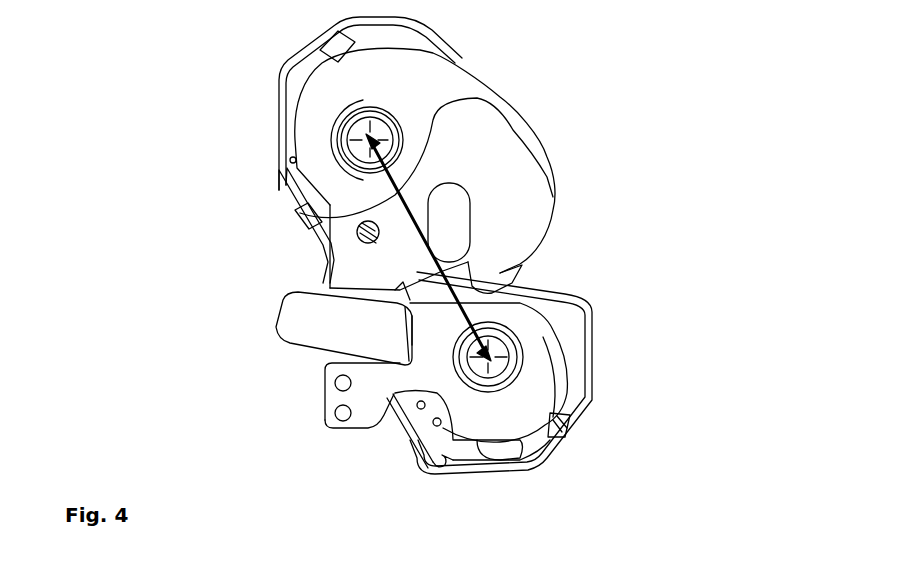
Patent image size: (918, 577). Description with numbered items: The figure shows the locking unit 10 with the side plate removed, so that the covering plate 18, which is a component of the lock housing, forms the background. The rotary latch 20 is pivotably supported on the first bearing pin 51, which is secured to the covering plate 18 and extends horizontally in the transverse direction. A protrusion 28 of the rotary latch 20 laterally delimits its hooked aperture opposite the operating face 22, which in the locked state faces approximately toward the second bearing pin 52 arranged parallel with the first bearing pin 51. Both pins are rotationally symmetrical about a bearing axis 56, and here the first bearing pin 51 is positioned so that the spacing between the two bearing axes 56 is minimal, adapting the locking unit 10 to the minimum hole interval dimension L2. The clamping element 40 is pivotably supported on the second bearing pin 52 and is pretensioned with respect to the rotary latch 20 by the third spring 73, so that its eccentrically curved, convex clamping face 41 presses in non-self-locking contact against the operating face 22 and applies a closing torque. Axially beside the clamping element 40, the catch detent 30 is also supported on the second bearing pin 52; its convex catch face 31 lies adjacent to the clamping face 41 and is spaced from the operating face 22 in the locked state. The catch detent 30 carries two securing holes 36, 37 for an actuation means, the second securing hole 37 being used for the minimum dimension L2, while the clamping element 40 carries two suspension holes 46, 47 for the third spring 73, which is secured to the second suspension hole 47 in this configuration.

The locking unit 10 is at (165, 423).
The covering plate 18 is at (427, 33).
The rotary latch 20 is at (520, 188).
The operating face 22 is at (412, 331).
The protrusion 28 is at (510, 233).
The catch detent 30 is at (368, 375).
The catch face 31 is at (412, 353).
The first securing hole 36 is at (338, 418).
The second securing hole 37 is at (337, 391).
The clamping element 40 is at (503, 297).
The clamping face 41 is at (403, 300).
The first suspension hole 46 is at (440, 425).
The second suspension hole 47 is at (418, 407).
The first bearing pin 51 is at (341, 127).
The second bearing pin 52 is at (510, 342).
The bearing axis 56 is at (362, 141).
The third spring 73 is at (510, 447).
The minimum hole interval dimension L2 is at (390, 200).